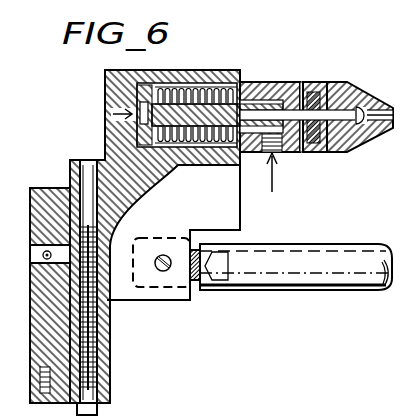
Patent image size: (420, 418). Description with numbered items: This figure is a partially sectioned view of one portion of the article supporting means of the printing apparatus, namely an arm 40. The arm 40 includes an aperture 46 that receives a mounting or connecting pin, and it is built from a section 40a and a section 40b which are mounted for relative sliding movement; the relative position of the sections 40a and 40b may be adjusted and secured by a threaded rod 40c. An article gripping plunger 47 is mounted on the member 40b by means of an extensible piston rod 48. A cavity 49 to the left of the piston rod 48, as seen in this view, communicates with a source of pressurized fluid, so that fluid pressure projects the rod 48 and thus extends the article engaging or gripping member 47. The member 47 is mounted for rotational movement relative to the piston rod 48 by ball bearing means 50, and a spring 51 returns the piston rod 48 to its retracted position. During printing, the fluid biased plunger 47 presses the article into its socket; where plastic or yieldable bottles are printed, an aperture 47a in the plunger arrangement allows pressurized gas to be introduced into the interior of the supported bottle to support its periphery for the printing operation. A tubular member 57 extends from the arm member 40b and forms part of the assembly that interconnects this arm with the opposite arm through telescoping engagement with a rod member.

The arm 40 is at (88, 72).
The section 40a is at (44, 188).
The section 40b is at (242, 213).
The threaded rod 40c is at (96, 349).
The aperture 46 is at (31, 252).
The article gripping plunger 47 is at (356, 84).
The aperture 47a is at (386, 107).
The extensible piston rod 48 is at (249, 82).
The cavity 49 is at (112, 113).
The ball bearing means 50 is at (313, 98).
The spring 51 is at (224, 80).
The tubular member 57 is at (312, 258).